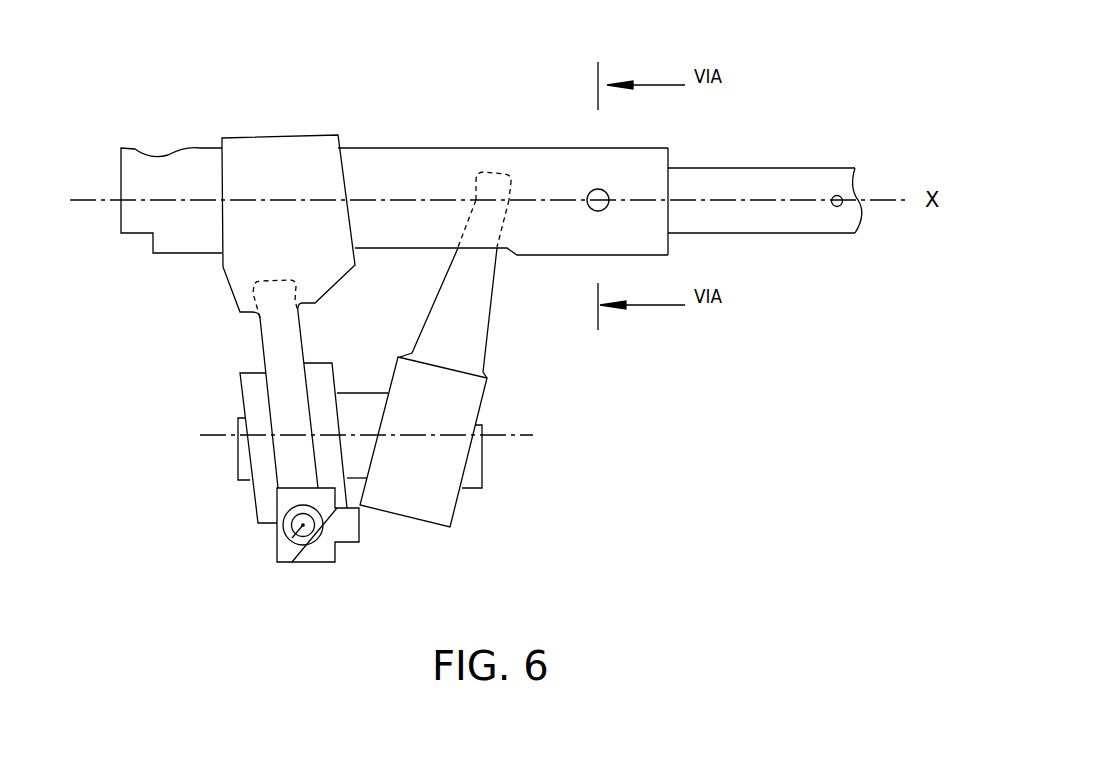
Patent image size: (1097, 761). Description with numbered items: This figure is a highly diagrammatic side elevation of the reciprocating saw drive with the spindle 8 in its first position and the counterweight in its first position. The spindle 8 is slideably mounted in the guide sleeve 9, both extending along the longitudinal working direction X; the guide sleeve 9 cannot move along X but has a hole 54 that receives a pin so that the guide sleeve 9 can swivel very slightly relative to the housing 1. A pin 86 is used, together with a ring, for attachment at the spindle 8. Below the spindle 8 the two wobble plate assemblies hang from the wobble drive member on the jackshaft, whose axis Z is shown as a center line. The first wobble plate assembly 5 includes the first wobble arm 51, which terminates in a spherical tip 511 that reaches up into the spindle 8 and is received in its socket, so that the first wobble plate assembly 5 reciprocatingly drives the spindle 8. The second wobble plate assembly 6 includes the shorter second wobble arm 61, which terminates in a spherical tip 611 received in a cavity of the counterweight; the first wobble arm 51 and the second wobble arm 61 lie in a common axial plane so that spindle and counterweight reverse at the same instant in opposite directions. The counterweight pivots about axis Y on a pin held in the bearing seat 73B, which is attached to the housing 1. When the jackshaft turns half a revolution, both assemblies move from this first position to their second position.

The housing 1 is at (309, 102).
The first wobble plate assembly 5 is at (516, 353).
The second wobble plate assembly 6 is at (226, 333).
The spindle 8 is at (824, 127).
The guide sleeve 9 is at (418, 173).
The first wobble arm 51 is at (468, 307).
The hole 54 is at (607, 192).
The second wobble arm 61 is at (256, 369).
The pin 86 is at (834, 207).
The spherical tip 511 is at (497, 183).
The spherical tip 611 is at (272, 285).
The bearing seat 73B is at (290, 498).